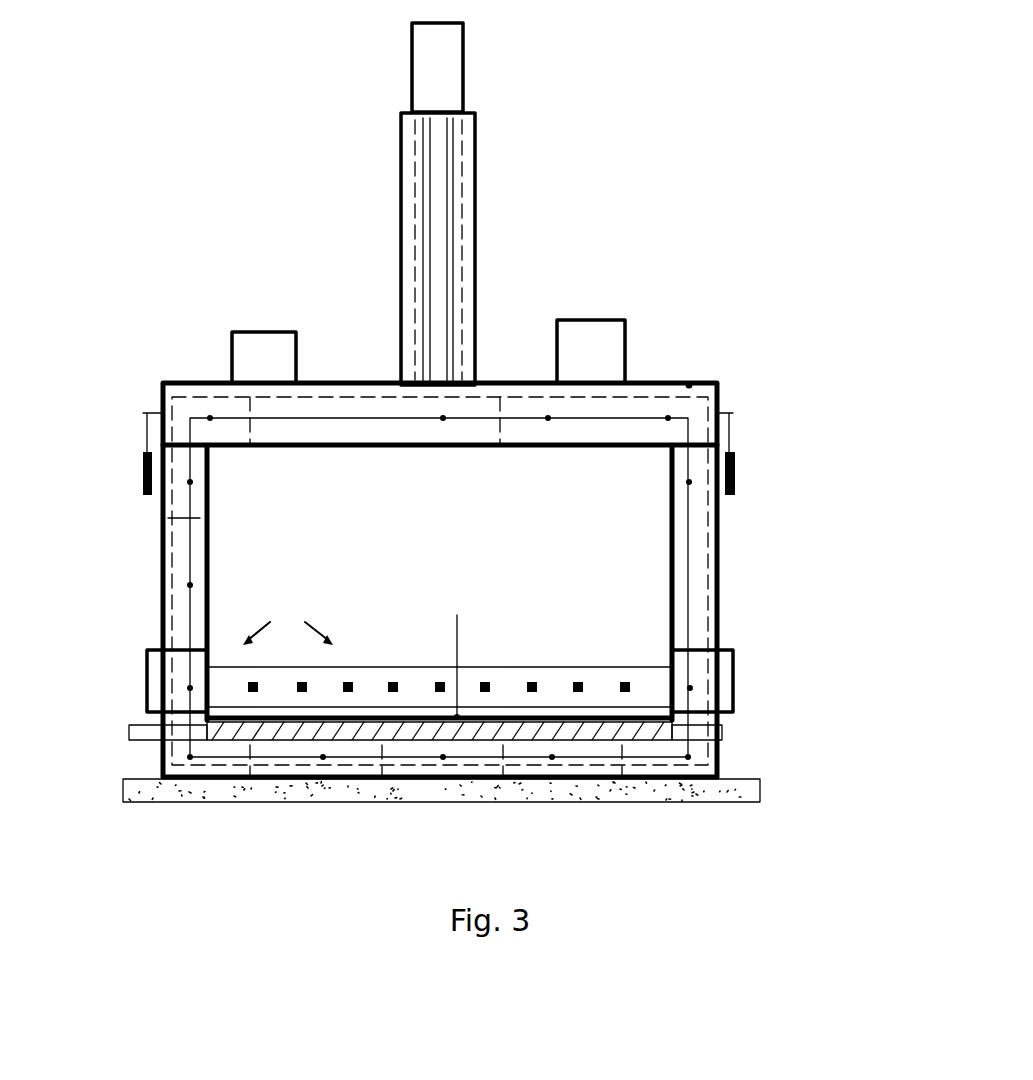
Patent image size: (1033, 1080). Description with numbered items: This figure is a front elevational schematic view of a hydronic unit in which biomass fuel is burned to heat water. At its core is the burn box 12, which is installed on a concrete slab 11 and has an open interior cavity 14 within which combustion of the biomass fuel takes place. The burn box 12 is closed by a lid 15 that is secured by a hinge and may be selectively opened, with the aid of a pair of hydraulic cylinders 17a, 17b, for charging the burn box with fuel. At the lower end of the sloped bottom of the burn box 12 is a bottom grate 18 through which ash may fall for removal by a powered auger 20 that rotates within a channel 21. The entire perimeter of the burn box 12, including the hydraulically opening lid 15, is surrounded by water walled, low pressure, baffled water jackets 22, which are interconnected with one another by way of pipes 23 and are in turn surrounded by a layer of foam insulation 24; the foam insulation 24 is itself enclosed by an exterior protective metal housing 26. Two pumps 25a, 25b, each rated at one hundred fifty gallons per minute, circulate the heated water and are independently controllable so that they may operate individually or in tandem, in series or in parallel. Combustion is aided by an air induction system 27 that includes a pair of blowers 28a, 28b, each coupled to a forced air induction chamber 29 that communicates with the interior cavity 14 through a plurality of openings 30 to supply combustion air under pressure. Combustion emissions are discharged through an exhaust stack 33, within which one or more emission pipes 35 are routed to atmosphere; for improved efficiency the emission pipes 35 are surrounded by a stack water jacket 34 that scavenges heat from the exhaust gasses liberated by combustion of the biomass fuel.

The concrete slab 11 is at (757, 795).
The burn box 12 is at (207, 507).
The interior cavity 14 is at (460, 568).
The lid 15 is at (690, 385).
The hydraulic cylinder 17a is at (735, 458).
The hydraulic cylinder 17b is at (143, 465).
The bottom grate 18 is at (453, 651).
The powered auger 20 is at (129, 733).
The channel 21 is at (722, 733).
The water jackets 22 is at (325, 432).
The pipes 23 is at (190, 482).
The foam insulation 24 is at (712, 607).
The pump 25a is at (591, 351).
The pump 25b is at (290, 373).
The exterior protective metal housing 26 is at (717, 383).
The air induction system 27 is at (288, 622).
The blower 28a is at (733, 678).
The blower 28b is at (147, 690).
The forced air induction chamber 29 is at (410, 667).
The openings 30 is at (302, 682).
The exhaust stack 33 is at (412, 65).
The stack water jacket 34 is at (463, 196).
The emission pipes 35 is at (425, 150).